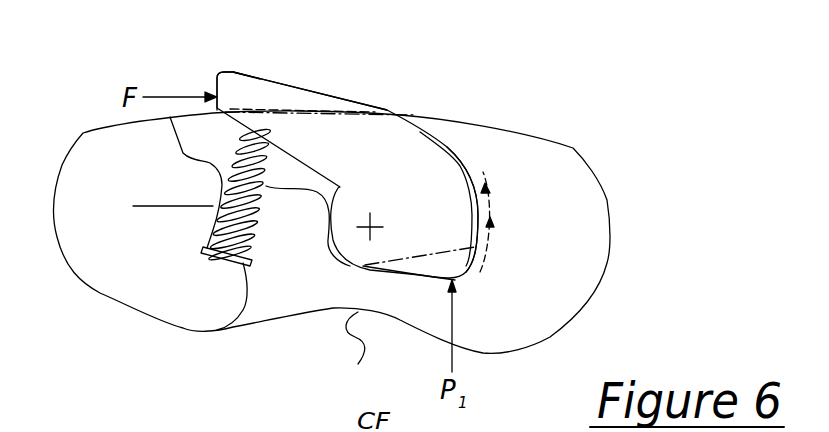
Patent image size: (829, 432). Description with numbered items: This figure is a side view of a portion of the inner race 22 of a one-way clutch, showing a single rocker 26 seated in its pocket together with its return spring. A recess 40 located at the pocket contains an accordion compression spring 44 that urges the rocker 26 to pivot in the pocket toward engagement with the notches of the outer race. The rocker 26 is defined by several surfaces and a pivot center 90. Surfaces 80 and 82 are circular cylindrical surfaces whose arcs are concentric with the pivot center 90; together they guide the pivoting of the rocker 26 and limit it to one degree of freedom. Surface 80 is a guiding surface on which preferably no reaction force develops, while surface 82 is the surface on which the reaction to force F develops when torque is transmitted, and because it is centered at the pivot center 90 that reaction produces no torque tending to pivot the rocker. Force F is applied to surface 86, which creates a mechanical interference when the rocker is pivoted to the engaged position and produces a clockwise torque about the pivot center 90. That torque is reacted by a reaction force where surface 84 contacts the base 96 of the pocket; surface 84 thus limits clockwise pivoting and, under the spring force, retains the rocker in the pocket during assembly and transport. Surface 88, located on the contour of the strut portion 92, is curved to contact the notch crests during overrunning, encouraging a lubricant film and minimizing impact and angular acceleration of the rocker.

The inner race 22 is at (587, 253).
The rocker 26 is at (421, 214).
The recess 40 is at (228, 328).
The accordion compression spring 44 is at (133, 206).
The guiding surface 80 is at (335, 248).
The reaction surface 82 is at (502, 132).
The stop surface 84 is at (433, 278).
The force-receiving surface 86 is at (215, 83).
The curved contact surface 88 is at (303, 90).
The pivot center 90 is at (370, 227).
The strut portion 92 is at (237, 90).
The pocket base 96 is at (351, 351).